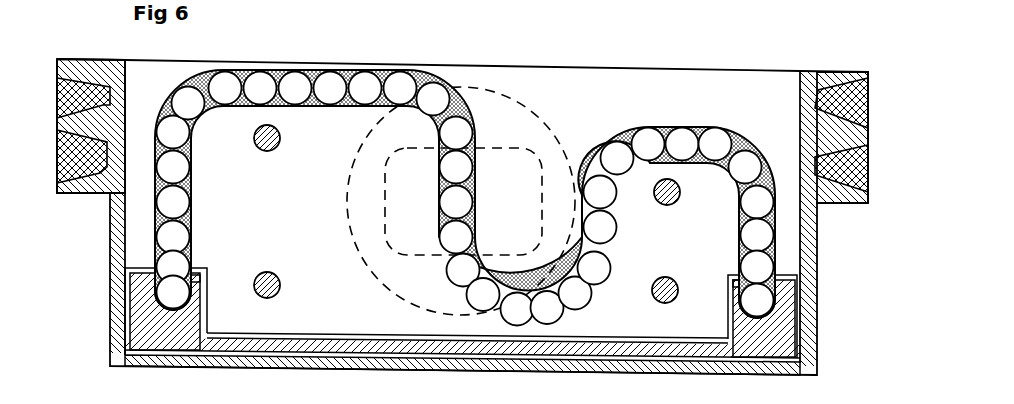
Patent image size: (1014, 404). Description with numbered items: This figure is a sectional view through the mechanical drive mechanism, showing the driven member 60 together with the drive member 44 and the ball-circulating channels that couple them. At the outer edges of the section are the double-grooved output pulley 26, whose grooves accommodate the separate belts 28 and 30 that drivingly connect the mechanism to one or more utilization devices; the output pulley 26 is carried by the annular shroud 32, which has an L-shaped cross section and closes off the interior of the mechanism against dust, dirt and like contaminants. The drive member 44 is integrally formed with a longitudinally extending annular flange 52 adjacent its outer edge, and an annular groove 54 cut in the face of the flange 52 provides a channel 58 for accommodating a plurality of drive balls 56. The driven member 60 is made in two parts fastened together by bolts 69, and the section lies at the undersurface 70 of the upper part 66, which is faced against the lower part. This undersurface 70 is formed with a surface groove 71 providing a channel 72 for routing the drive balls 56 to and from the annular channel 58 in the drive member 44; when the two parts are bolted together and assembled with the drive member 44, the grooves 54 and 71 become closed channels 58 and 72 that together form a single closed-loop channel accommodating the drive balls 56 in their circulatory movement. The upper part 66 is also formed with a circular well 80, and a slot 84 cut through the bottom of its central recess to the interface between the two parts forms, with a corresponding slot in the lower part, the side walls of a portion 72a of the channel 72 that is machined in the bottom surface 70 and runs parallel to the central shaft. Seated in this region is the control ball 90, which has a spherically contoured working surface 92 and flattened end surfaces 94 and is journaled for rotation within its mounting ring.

The output pulley 26 is at (85, 65).
The belt 28 is at (56, 182).
The belt 30 is at (56, 80).
The annular shroud 32 is at (348, 362).
The drive member 44 is at (435, 356).
The annular flange 52 is at (135, 327).
The annular groove 54 is at (178, 303).
The drive balls 56 is at (174, 236).
The channel 58 is at (193, 283).
The driven member 60 is at (648, 45).
The upper part 66 is at (453, 64).
The bolts 69 is at (272, 149).
The undersurface 70 is at (543, 83).
The surface groove 71 is at (247, 105).
The channel 72 is at (279, 106).
The channel portion 72a is at (473, 185).
The circular well 80 is at (367, 262).
The slot 84 is at (437, 183).
The control ball 90 is at (445, 201).
The working surface 92 is at (384, 201).
The flattened end surfaces 94 is at (428, 184).